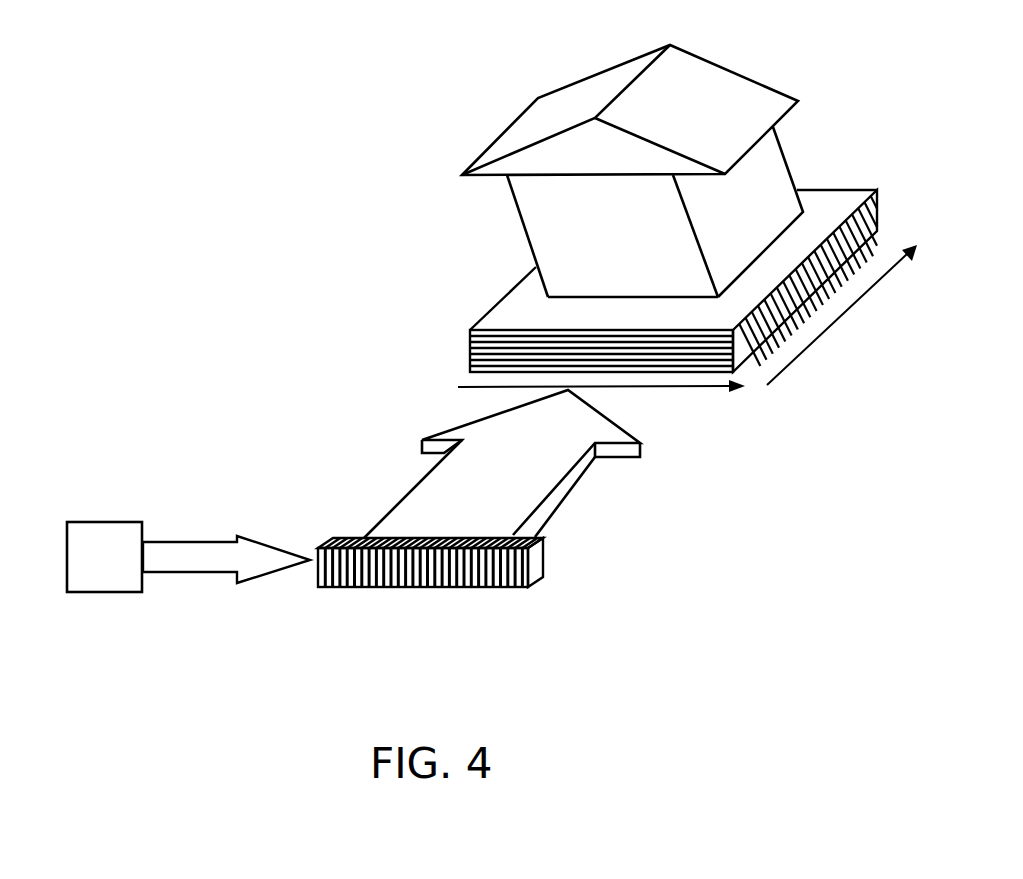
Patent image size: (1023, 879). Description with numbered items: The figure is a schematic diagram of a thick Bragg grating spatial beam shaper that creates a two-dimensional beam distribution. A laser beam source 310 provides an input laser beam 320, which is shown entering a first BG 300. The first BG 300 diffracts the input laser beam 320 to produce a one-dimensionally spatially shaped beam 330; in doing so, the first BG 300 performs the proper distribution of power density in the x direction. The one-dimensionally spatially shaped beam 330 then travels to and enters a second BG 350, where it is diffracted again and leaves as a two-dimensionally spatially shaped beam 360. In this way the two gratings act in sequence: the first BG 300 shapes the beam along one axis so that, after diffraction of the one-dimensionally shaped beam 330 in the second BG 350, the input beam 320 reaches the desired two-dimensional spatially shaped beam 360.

The first BG 300 is at (412, 526).
The laser beam source 310 is at (104, 557).
The input laser beam 320 is at (226, 597).
The one-dimensionally spatially shaped beam 330 is at (488, 473).
The second BG 350 is at (676, 306).
The two-dimensionally spatially shaped beam 360 is at (601, 237).